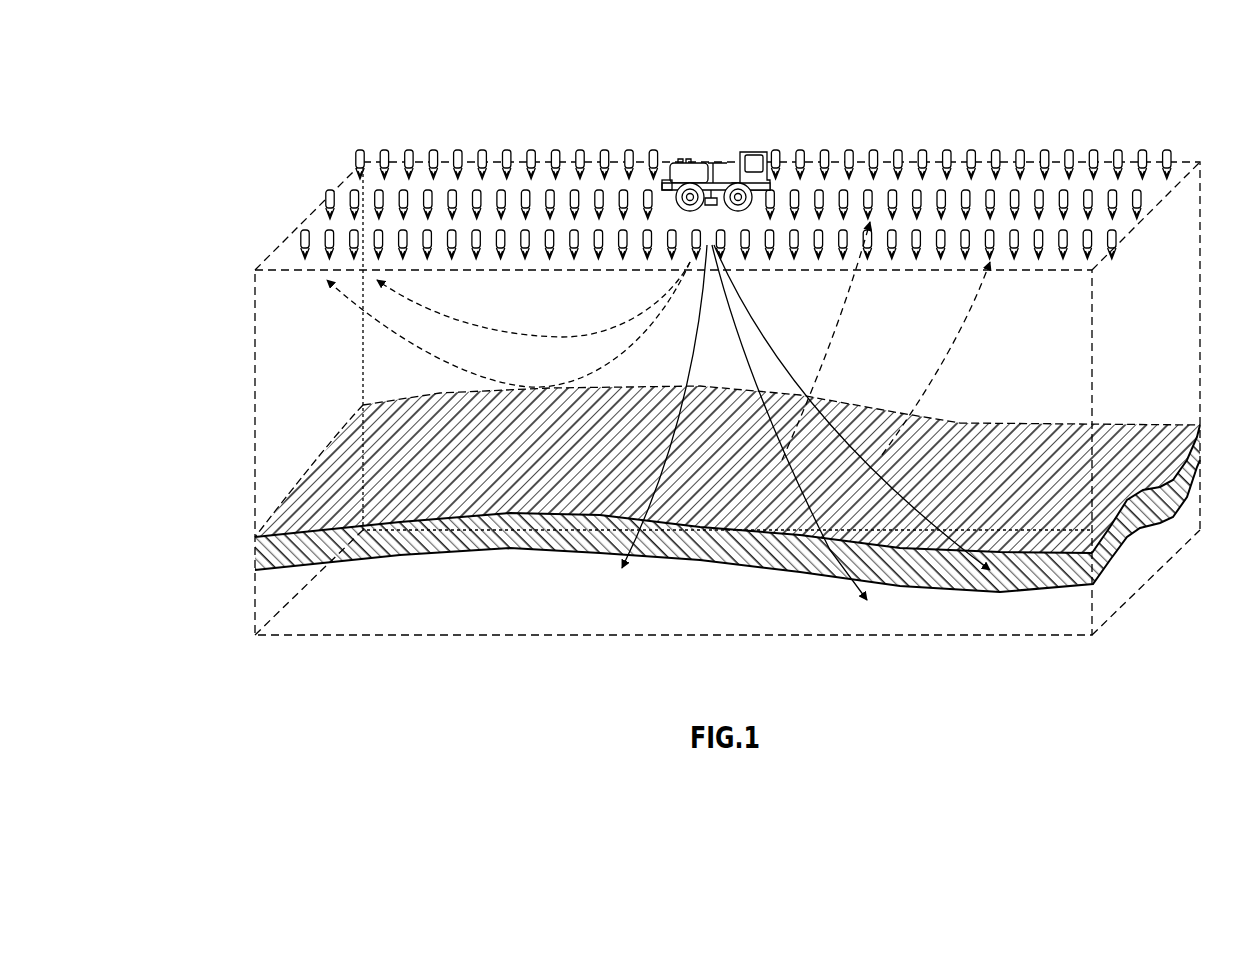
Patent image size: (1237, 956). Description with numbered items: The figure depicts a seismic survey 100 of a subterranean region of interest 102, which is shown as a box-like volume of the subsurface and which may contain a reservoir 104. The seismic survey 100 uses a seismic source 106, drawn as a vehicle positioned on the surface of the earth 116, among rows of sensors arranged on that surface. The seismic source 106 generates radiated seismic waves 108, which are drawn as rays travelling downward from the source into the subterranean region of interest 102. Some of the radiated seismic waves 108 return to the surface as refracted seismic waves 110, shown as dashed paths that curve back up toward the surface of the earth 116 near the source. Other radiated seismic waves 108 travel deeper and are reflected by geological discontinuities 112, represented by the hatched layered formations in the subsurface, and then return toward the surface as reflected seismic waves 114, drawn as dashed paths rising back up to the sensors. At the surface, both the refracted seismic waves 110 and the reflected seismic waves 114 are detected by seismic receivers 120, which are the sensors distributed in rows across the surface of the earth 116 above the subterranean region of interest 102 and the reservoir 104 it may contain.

The seismic survey 100 is at (311, 75).
The subterranean region of interest 102 is at (1051, 620).
The reservoir 104 is at (262, 556).
The seismic source 106 is at (688, 158).
The radiated seismic waves 108 is at (633, 553).
The refracted seismic waves 110 is at (445, 372).
The geological discontinuities 112 is at (1117, 559).
The reflected seismic waves 114 is at (855, 298).
The surface of the earth 116 is at (306, 222).
The seismic receivers 120 is at (1068, 150).